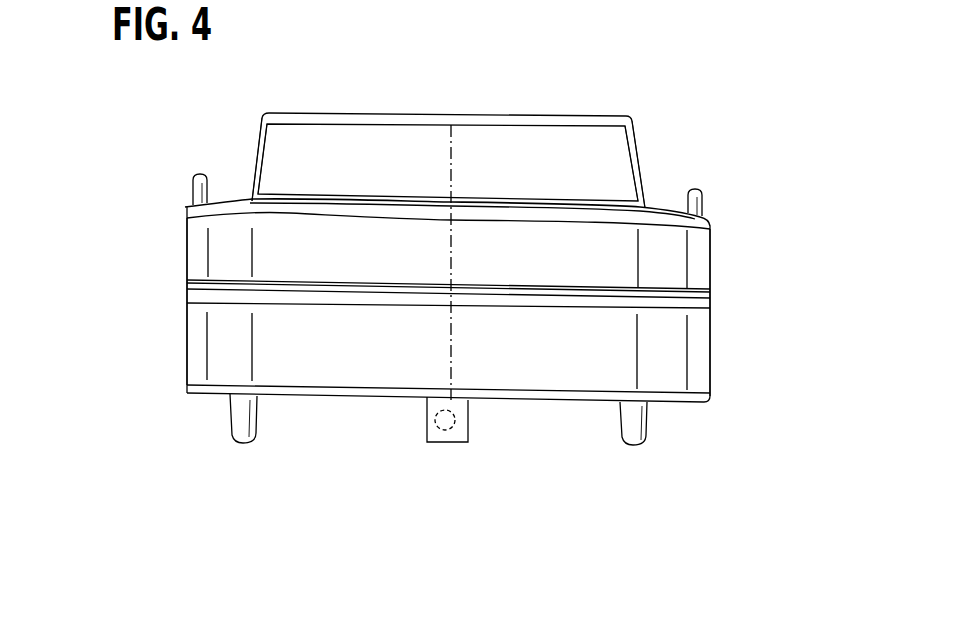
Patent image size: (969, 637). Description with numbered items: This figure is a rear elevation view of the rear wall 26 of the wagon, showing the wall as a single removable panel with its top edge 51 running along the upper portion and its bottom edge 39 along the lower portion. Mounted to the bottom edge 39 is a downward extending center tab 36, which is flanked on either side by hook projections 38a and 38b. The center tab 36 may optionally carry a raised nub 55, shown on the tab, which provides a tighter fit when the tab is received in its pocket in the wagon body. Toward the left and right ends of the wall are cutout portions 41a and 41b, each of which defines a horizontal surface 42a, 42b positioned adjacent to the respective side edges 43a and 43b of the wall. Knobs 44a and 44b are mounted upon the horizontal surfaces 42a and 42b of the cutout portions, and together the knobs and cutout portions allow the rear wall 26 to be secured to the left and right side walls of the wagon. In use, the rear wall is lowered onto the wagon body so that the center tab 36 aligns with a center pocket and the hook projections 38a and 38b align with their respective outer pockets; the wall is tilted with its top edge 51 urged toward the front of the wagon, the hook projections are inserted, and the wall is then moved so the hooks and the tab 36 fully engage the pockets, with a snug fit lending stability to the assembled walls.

The rear wall 26 is at (100, 332).
The center tab 36 is at (437, 443).
The hook projection 38a is at (185, 515).
The hook projection 38b is at (632, 445).
The bottom edge 39 is at (682, 403).
The cutout portion 41a is at (222, 121).
The cutout portion 41b is at (748, 158).
The horizontal surface 42a is at (228, 198).
The horizontal surface 42b is at (663, 210).
The side edge 43a is at (187, 280).
The side edge 43b is at (710, 323).
The knob 44a is at (193, 180).
The knob 44b is at (703, 203).
The top edge 51 is at (443, 115).
The raised nub 55 is at (468, 428).